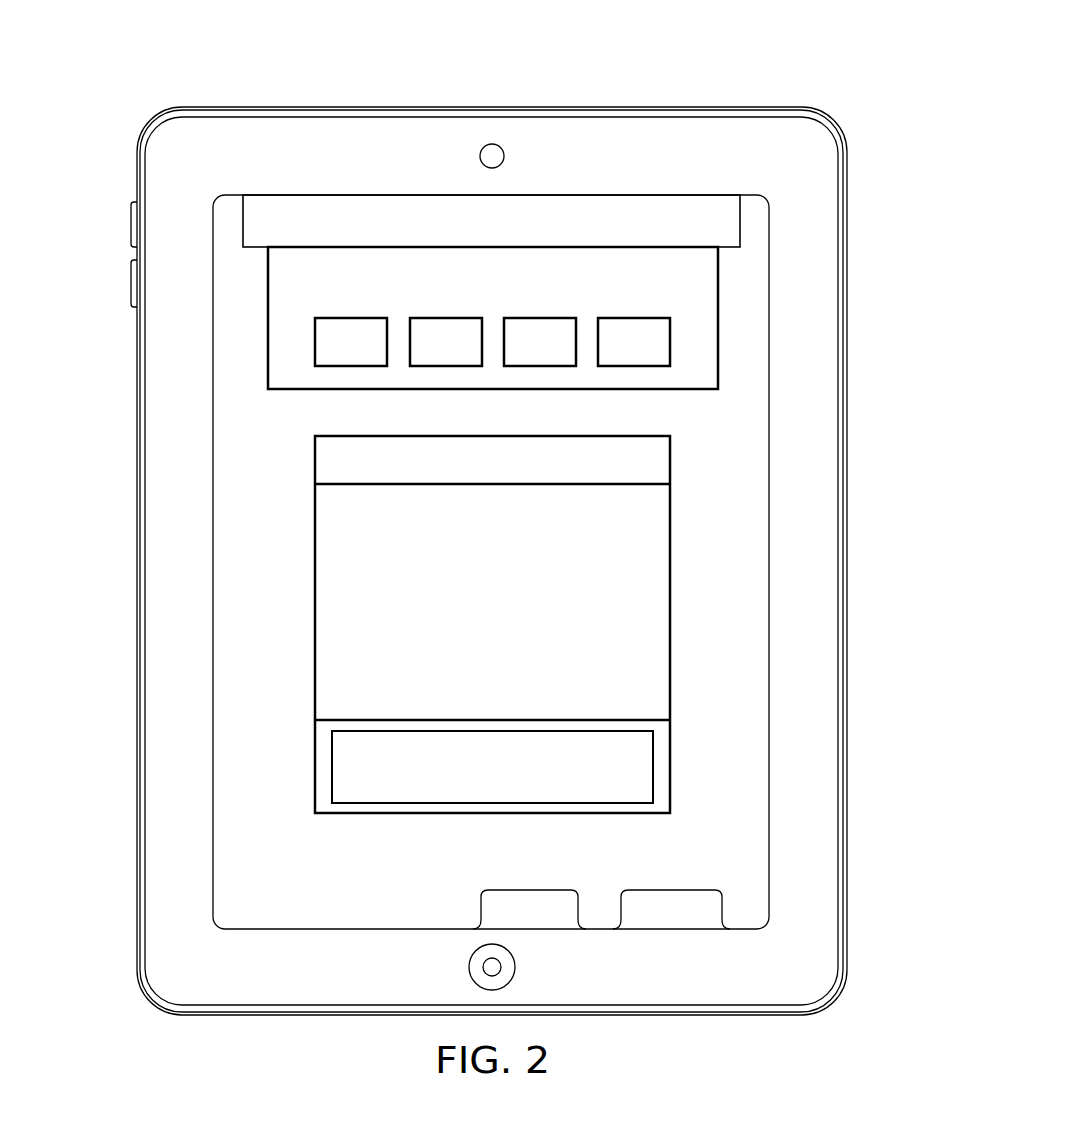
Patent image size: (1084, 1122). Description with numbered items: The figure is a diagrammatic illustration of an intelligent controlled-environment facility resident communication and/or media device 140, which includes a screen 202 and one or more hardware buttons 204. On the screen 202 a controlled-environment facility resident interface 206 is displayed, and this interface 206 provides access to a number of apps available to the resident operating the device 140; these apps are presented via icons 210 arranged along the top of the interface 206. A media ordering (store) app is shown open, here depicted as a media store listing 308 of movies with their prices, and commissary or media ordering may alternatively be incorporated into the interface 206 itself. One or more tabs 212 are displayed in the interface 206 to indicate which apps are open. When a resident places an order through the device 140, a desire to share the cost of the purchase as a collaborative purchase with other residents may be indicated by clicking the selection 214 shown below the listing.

The controlled-environment facility resident communication and/or media device 140 is at (695, 66).
The screen 202 is at (222, 560).
The hardware buttons 204 is at (108, 235).
The interface 206 is at (737, 344).
The icons 210 is at (350, 318).
The tabs 212 is at (672, 866).
The selection 214 is at (330, 766).
The media store interface 308 is at (676, 600).